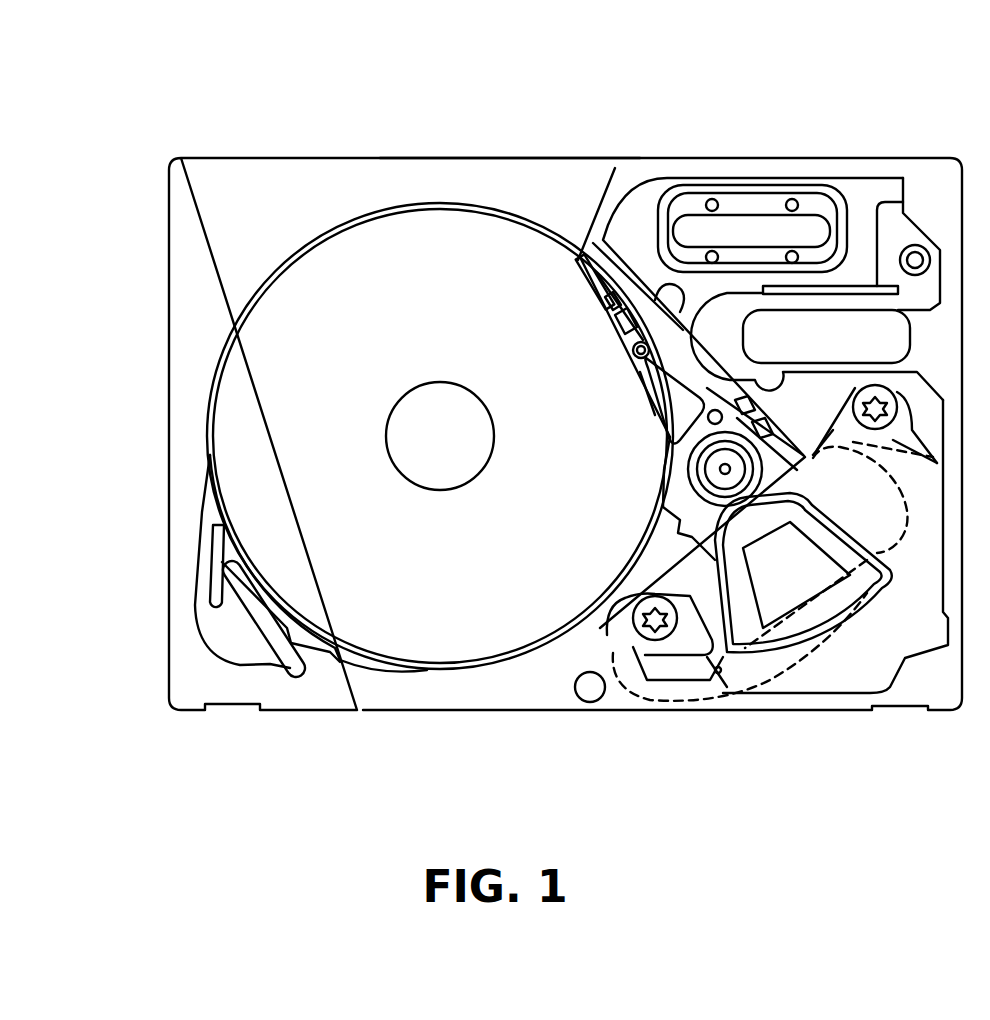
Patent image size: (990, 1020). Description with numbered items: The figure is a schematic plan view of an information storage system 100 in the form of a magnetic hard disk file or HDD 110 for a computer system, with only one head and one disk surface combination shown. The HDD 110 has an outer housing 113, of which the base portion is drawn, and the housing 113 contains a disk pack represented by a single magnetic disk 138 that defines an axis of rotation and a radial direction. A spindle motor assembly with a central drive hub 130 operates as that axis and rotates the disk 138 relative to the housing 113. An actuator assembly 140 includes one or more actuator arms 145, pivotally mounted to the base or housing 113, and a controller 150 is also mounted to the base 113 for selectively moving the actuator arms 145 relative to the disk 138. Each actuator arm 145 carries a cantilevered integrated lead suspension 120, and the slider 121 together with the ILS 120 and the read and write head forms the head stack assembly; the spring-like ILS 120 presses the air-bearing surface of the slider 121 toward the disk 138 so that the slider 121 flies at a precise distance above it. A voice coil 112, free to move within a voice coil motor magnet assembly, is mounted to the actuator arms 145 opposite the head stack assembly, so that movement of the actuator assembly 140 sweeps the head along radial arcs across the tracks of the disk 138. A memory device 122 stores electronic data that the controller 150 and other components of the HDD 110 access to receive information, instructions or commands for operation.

The disk drive 100 is at (62, 58).
The HDD 110 is at (290, 152).
The housing 113 is at (513, 158).
The magnetic disk 138 is at (437, 200).
The central drive hub 130 is at (422, 454).
The slider 121 is at (618, 197).
The integrated lead suspension 120 is at (598, 313).
The actuator arm 145 is at (637, 392).
The actuator assembly 140 is at (687, 493).
The voice coil 112 is at (723, 612).
The controller 150 is at (880, 588).
The memory device 122 is at (825, 657).